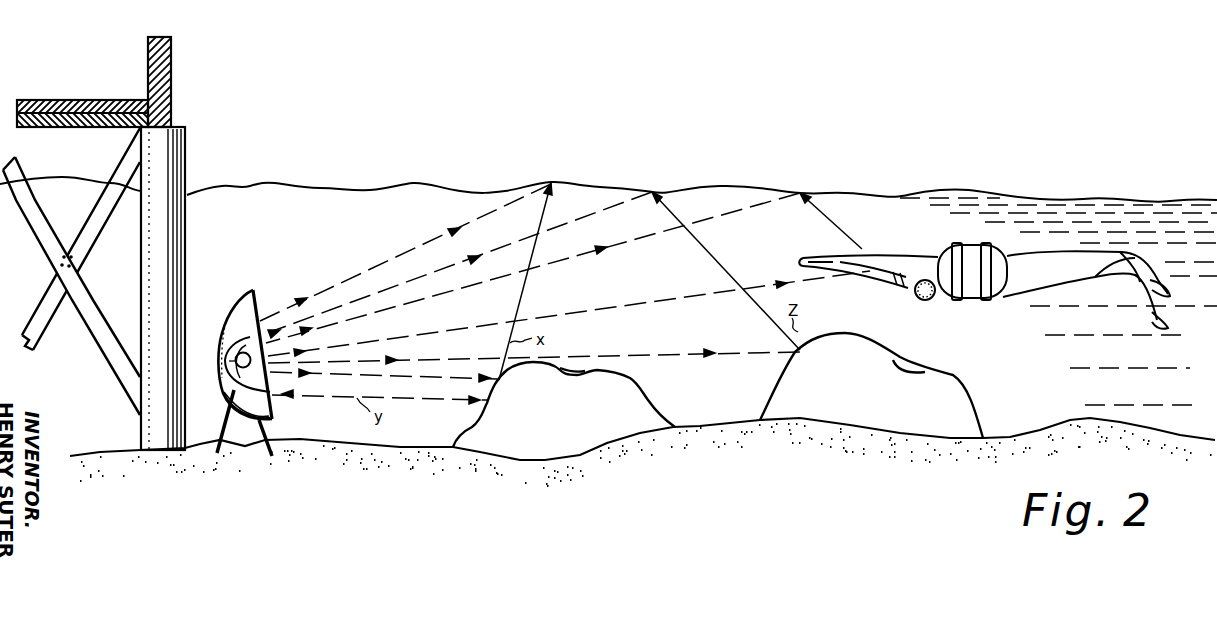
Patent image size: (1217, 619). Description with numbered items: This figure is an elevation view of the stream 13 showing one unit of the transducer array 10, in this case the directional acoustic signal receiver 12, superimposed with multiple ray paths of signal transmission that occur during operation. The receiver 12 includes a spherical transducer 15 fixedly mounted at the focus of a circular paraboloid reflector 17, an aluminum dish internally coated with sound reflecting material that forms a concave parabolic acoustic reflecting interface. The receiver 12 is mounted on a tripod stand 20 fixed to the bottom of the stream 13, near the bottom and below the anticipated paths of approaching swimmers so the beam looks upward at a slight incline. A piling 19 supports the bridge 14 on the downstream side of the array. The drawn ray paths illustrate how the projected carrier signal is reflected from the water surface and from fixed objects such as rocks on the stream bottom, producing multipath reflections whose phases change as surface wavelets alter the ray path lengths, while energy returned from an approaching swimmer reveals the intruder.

The transducer array 10 is at (277, 268).
The directional acoustic signal receiver 12 is at (237, 292).
The stream 13 is at (1016, 362).
The bridge 14 is at (174, 53).
The spherical transducer 15 is at (246, 340).
The circular paraboloid reflector 17 is at (233, 307).
The piling 19 is at (178, 150).
The tripod stand 20 is at (273, 437).